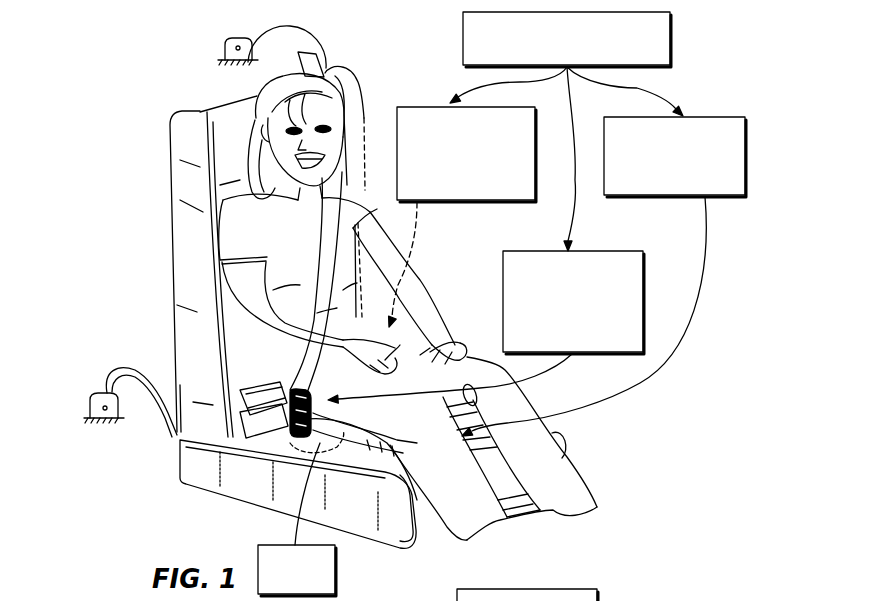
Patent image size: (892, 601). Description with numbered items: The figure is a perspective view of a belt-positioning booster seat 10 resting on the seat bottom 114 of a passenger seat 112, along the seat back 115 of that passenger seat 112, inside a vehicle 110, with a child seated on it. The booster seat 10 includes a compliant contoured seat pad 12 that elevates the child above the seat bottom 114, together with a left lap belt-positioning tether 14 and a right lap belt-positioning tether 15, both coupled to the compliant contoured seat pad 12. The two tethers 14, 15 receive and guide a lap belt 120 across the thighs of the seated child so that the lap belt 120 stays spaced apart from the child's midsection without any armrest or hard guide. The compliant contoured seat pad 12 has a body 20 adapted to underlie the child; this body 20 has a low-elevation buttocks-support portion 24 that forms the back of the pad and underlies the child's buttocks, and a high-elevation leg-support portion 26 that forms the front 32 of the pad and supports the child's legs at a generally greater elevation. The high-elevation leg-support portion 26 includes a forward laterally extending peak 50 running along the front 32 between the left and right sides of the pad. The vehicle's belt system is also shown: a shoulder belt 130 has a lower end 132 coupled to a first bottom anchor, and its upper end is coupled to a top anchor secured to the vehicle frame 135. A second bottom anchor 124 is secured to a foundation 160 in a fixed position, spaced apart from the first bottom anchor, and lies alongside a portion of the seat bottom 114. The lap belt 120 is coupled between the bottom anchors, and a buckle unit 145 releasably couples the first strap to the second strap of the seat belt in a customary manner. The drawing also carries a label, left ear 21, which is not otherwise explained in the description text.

The belt-positioning booster seat 10 is at (672, 43).
The compliant contoured seat pad 12 is at (710, 116).
The left lap belt-positioning tether 14 is at (605, 251).
The right lap belt-positioning tether 15 is at (440, 107).
The body 20 is at (383, 470).
The left ear 21 is at (283, 545).
The low-elevation buttocks-support portion 24 is at (273, 437).
The high-elevation leg-support portion 26 is at (364, 460).
The front 32 is at (481, 456).
The forward laterally extending peak 50 is at (454, 408).
The vehicle 110 is at (109, 87).
The passenger seat 112 is at (157, 190).
The seat bottom 114 is at (255, 511).
The seat back 115 is at (160, 171).
The lap belt 120 is at (433, 343).
The second bottom anchor 124 is at (76, 401).
The shoulder belt 130 is at (356, 160).
The lower end 132 is at (211, 49).
The vehicle frame 135 is at (224, 80).
The buckle unit 145 is at (240, 409).
The foundation 160 is at (98, 435).